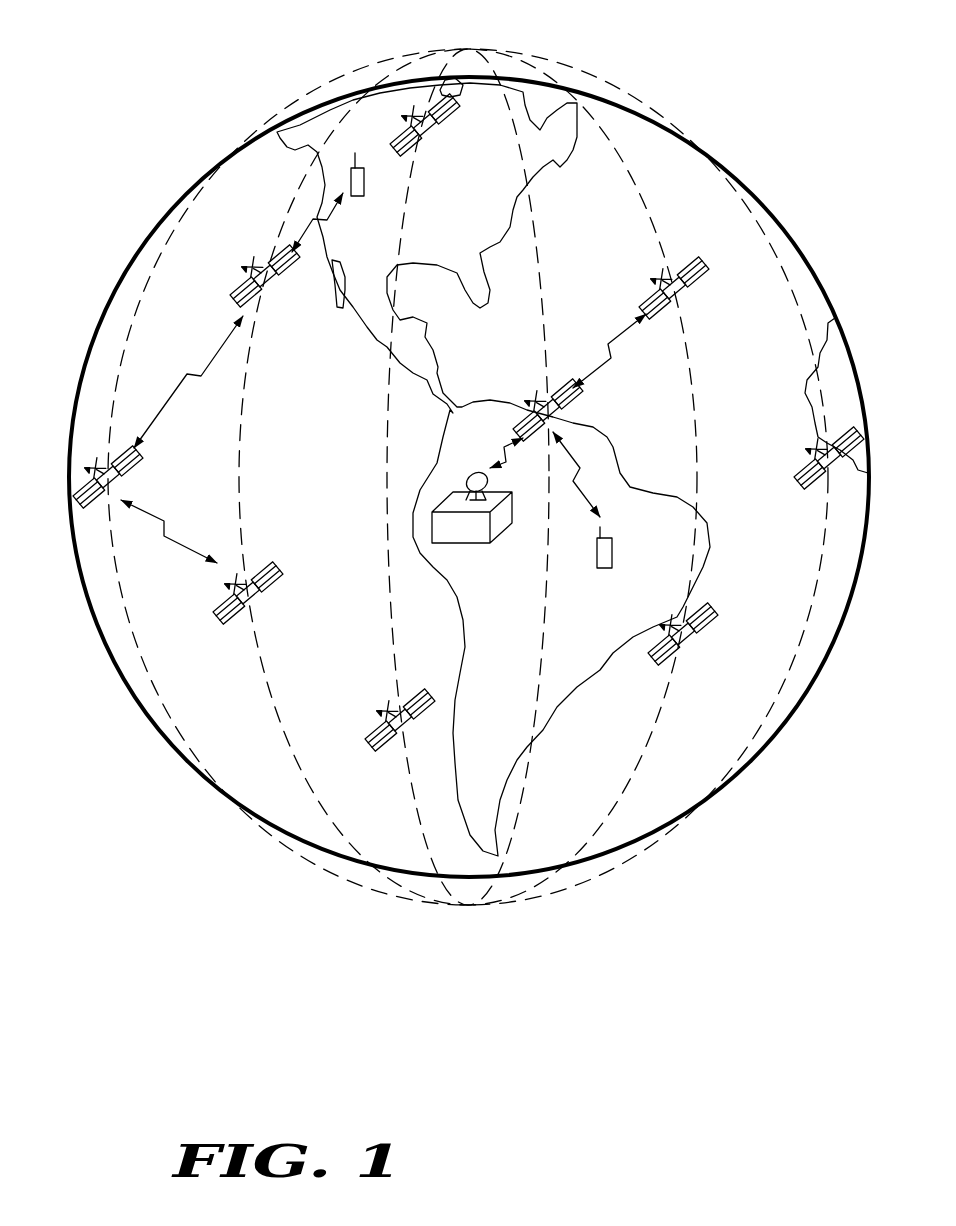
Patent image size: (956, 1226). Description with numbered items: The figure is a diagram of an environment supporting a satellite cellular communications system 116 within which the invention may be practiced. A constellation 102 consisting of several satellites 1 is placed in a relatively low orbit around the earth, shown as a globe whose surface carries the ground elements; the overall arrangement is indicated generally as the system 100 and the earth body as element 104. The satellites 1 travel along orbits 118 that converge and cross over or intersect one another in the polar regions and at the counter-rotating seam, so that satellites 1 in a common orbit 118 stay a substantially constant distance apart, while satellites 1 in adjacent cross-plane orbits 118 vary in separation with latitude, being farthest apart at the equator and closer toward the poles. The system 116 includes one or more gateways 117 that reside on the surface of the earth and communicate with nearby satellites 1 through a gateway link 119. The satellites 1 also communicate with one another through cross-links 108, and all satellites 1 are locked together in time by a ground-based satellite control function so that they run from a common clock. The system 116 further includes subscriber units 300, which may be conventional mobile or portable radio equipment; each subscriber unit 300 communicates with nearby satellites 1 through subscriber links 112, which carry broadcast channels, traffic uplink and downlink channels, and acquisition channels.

The satellite 1 is at (277, 290).
The satellite communication system 100 is at (470, 1017).
The constellation 102 is at (477, 47).
The earth 104 is at (99, 330).
The cross-link 108 is at (204, 360).
The subscriber link 112 is at (317, 224).
The satellite cellular communications system 116 is at (183, 828).
The gateway 117 is at (468, 543).
The orbit 118 is at (241, 426).
The gateway link 119 is at (507, 450).
The subscriber unit 300 is at (362, 197).